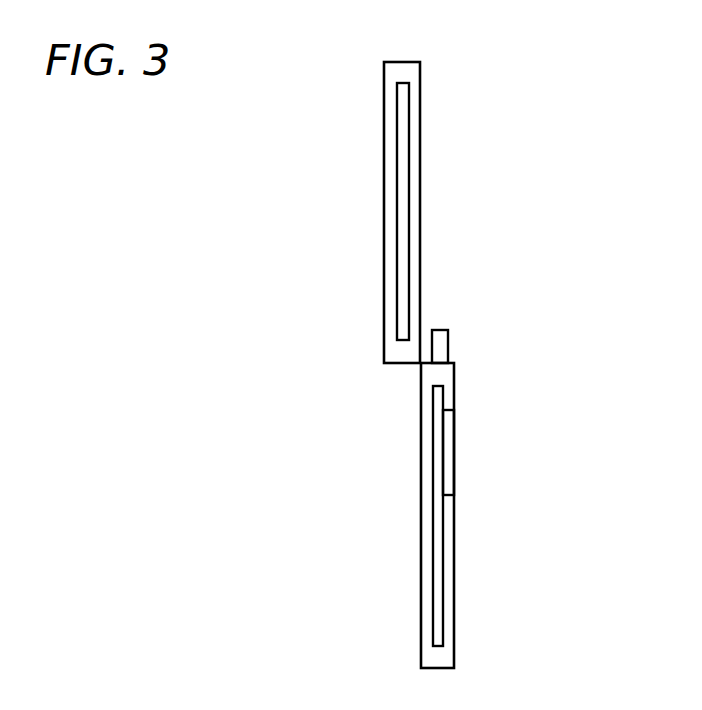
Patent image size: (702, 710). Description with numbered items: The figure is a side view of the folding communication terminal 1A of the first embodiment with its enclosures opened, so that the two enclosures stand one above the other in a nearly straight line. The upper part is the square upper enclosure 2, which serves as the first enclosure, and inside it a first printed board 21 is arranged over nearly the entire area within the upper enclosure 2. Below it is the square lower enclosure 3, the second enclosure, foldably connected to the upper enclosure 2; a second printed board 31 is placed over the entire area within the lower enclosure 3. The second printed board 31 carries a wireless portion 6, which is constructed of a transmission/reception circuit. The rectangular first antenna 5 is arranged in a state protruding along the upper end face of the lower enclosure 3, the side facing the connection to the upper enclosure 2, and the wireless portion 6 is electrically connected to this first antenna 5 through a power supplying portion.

The folding communication terminal 1A is at (349, 129).
The upper enclosure 2 is at (415, 74).
The first printed board 21 is at (403, 202).
The first antenna 5 is at (440, 347).
The lower enclosure 3 is at (449, 655).
The second printed board 31 is at (440, 569).
The wireless portion 6 is at (450, 469).